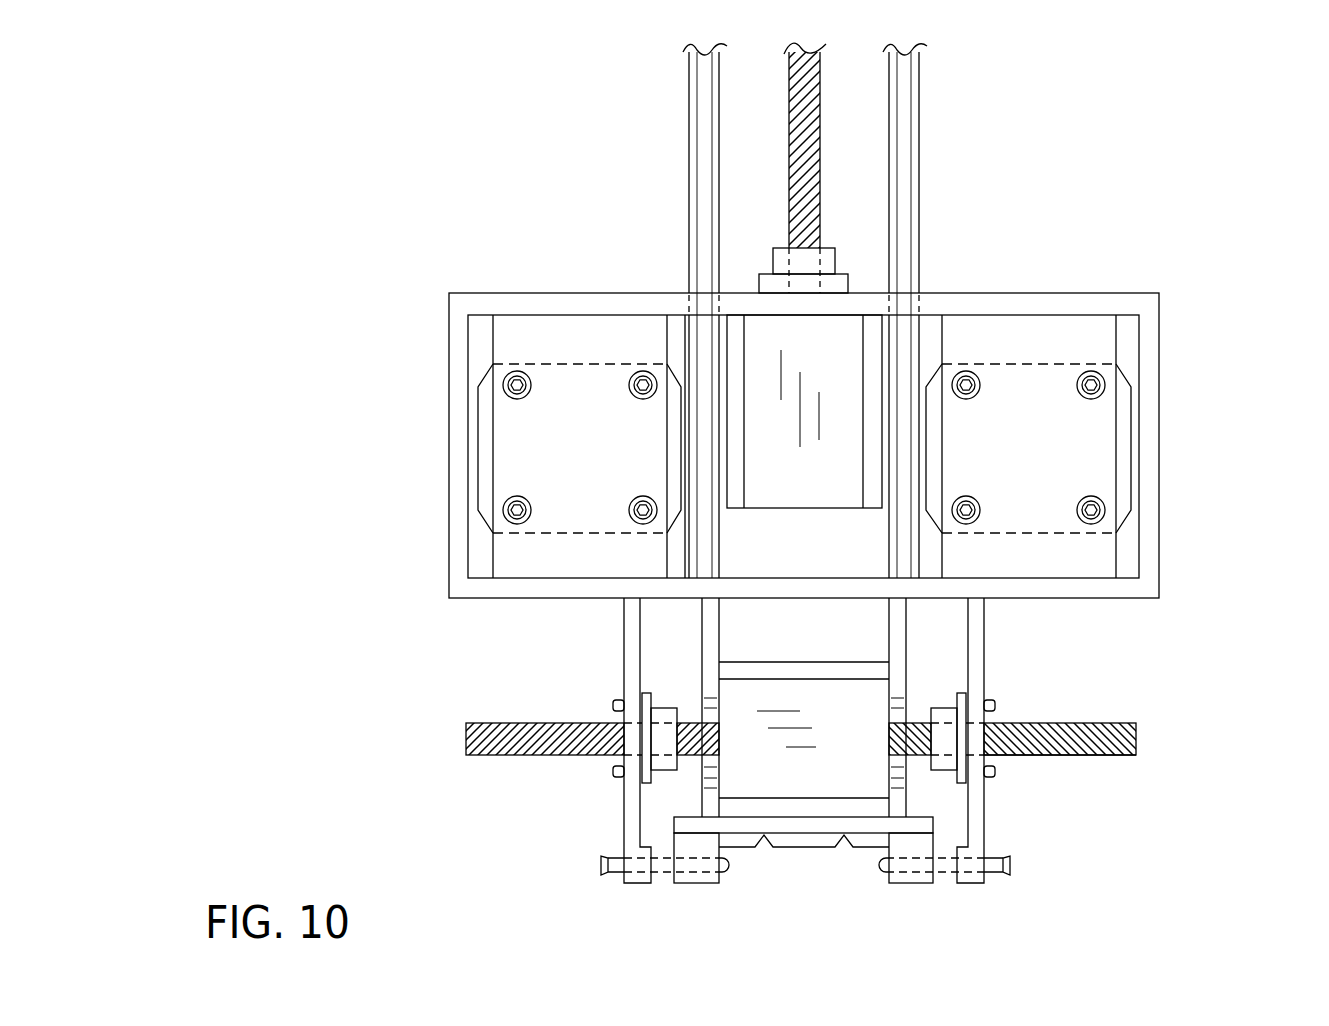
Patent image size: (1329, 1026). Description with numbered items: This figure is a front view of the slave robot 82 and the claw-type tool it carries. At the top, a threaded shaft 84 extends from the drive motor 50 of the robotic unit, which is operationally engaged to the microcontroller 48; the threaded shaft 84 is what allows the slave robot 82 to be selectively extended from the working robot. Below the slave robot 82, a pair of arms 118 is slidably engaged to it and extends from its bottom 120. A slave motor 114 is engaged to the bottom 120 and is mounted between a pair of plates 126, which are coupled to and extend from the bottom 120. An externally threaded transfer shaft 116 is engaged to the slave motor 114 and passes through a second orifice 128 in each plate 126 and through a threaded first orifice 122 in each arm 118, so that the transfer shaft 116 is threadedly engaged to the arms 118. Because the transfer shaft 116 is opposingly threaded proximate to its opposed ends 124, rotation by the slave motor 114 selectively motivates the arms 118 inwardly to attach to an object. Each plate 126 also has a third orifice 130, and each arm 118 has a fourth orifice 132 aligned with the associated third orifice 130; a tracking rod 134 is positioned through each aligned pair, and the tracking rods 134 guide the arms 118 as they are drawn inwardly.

The threaded shaft 84 is at (813, 122).
The drive motor 50 is at (833, 383).
The slave robot 82 is at (1162, 324).
The microcontroller 48 is at (1047, 463).
The bottom 120 is at (1115, 598).
The plates 126 is at (708, 648).
The slave motor 114 is at (753, 713).
The second orifice 128 is at (889, 735).
The first orifice 122 is at (977, 737).
The opposed ends 124 is at (1228, 742).
The transfer shaft 116 is at (1070, 755).
The tracking rod 134 is at (1012, 870).
The fourth orifice 132 is at (968, 883).
The third orifice 130 is at (912, 883).
The arms 118 is at (632, 800).